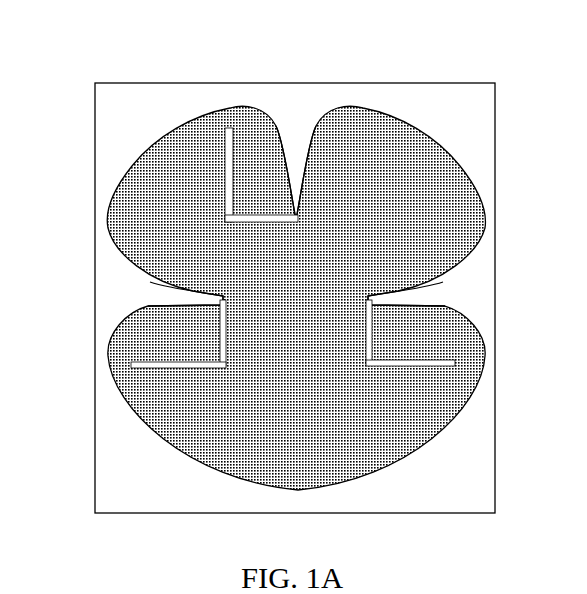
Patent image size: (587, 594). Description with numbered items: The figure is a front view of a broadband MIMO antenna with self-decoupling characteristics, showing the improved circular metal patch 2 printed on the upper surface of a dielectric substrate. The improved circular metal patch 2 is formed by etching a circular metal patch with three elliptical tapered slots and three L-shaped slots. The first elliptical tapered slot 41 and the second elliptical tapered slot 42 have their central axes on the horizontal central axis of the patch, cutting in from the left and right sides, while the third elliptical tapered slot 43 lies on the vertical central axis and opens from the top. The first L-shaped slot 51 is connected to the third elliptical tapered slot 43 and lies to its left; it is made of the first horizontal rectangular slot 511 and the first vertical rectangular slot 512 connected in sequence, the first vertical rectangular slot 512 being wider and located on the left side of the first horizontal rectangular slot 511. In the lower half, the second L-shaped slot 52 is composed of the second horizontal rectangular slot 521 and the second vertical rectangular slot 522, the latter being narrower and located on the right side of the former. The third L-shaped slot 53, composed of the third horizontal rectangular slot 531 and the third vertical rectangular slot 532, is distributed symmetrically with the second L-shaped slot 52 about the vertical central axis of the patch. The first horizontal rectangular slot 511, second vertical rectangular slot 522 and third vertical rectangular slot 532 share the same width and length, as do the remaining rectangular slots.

The improved circular metal patch 2 is at (383, 436).
The first elliptical tapered slot 41 is at (140, 292).
The second elliptical tapered slot 42 is at (437, 291).
The third elliptical tapered slot 43 is at (290, 145).
The first L-shaped slot 51 is at (229, 201).
The first horizontal rectangular slot 511 is at (255, 217).
The first vertical rectangular slot 512 is at (223, 182).
The second L-shaped slot 52 is at (218, 360).
The second horizontal rectangular slot 521 is at (167, 362).
The second vertical rectangular slot 522 is at (215, 322).
The third L-shaped slot 53 is at (383, 360).
The third horizontal rectangular slot 531 is at (405, 358).
The third vertical rectangular slot 532 is at (360, 322).